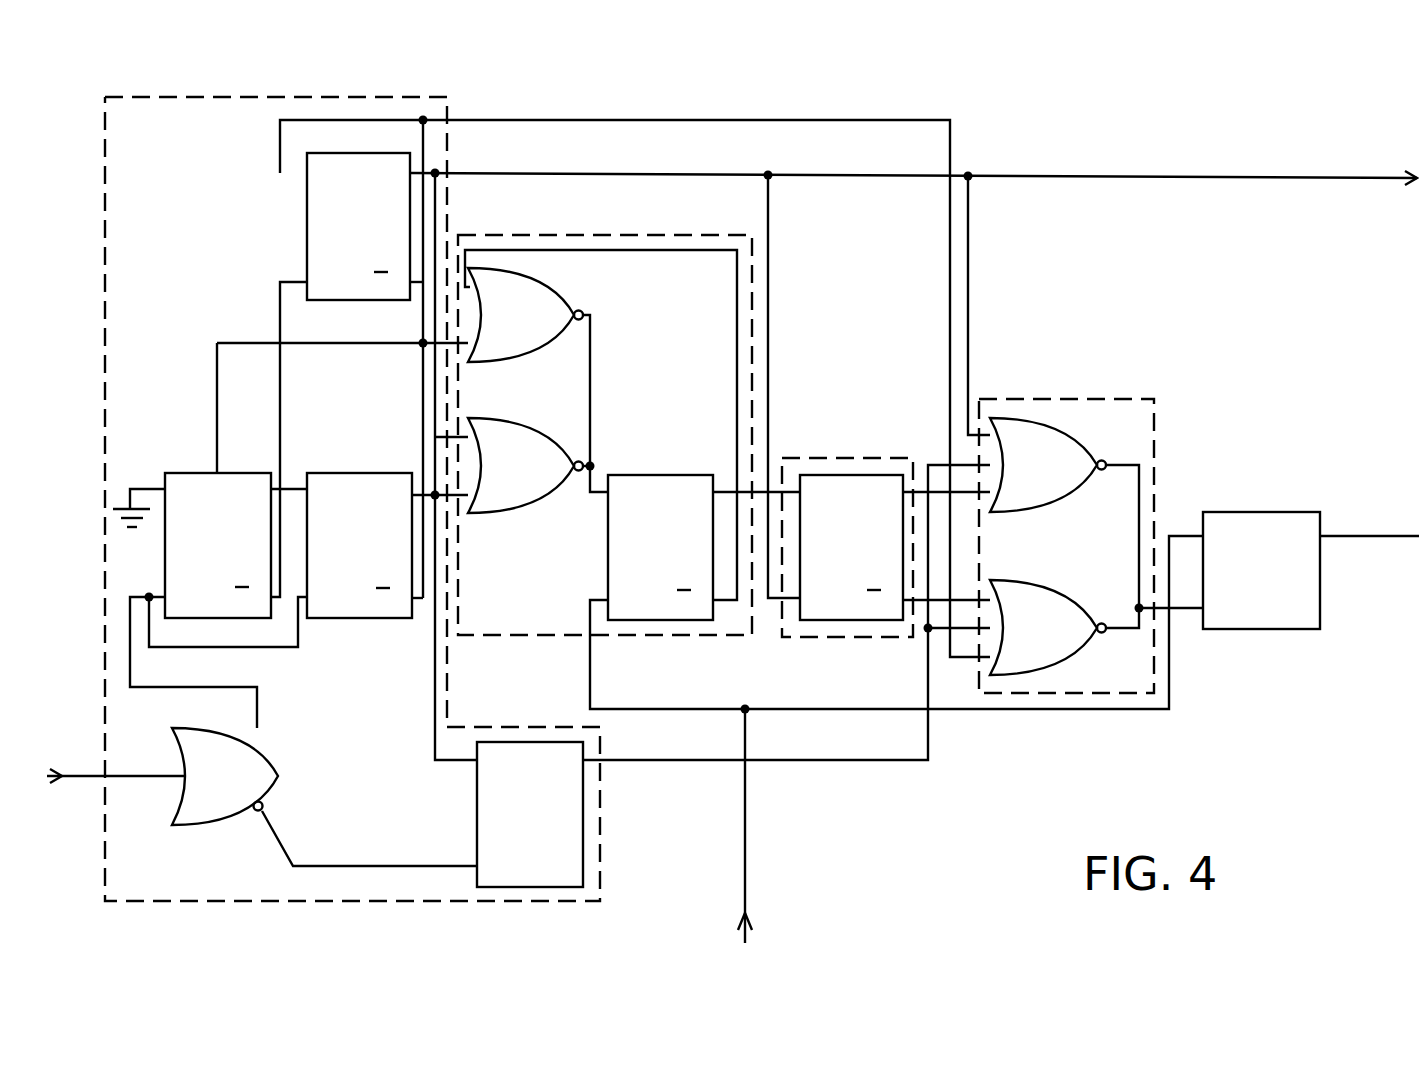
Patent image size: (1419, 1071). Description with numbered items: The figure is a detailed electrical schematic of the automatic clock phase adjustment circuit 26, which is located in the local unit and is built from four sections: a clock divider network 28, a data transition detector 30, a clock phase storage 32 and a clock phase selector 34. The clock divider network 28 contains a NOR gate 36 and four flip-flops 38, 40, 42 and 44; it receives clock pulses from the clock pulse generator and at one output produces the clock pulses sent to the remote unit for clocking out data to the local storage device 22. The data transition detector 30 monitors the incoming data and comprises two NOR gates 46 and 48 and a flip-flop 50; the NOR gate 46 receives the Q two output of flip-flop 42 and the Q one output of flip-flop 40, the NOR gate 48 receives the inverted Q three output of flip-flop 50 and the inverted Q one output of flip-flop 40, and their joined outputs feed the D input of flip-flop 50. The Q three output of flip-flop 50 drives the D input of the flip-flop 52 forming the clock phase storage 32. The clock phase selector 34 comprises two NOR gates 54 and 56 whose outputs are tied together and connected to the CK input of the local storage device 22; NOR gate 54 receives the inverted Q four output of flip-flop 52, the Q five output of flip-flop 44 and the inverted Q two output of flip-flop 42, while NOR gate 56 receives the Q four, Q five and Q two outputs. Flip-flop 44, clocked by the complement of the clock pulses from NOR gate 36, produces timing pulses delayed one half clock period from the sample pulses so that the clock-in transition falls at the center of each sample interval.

The local storage device 22 is at (1258, 512).
The automatic clock phase adjustment circuit 26 is at (780, 108).
The clock divider network 28 is at (270, 97).
The data transition detector 30 is at (502, 635).
The clock phase storage 32 is at (833, 458).
The clock phase selector 34 is at (1033, 399).
The NOR gate 36 is at (266, 755).
The flip-flop 38 is at (187, 473).
The flip-flop 40 is at (360, 618).
The flip-flop 42 is at (307, 232).
The flip-flop 44 is at (533, 887).
The NOR gate 46 is at (543, 500).
The NOR gate 48 is at (565, 298).
The flip-flop 50 is at (658, 475).
The flip-flop 52 is at (860, 620).
The NOR gate 54 is at (1082, 653).
The NOR gate 56 is at (1082, 487).